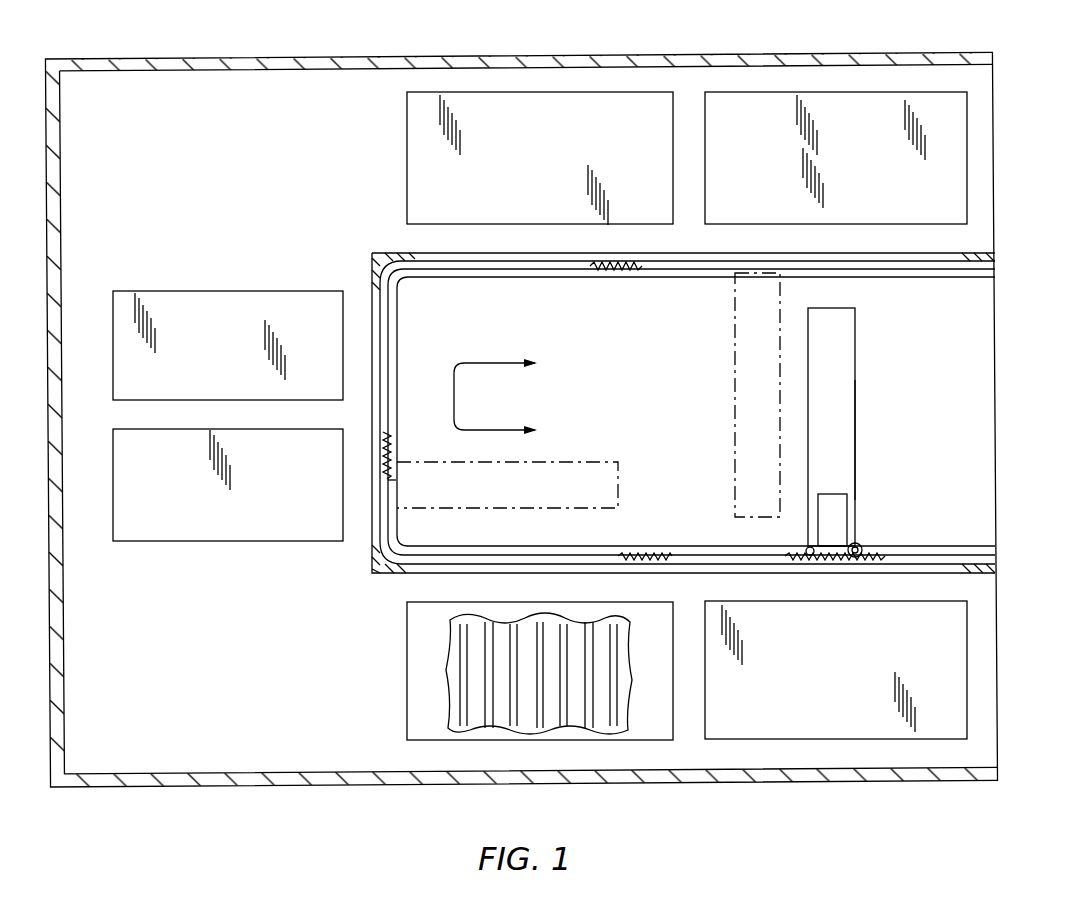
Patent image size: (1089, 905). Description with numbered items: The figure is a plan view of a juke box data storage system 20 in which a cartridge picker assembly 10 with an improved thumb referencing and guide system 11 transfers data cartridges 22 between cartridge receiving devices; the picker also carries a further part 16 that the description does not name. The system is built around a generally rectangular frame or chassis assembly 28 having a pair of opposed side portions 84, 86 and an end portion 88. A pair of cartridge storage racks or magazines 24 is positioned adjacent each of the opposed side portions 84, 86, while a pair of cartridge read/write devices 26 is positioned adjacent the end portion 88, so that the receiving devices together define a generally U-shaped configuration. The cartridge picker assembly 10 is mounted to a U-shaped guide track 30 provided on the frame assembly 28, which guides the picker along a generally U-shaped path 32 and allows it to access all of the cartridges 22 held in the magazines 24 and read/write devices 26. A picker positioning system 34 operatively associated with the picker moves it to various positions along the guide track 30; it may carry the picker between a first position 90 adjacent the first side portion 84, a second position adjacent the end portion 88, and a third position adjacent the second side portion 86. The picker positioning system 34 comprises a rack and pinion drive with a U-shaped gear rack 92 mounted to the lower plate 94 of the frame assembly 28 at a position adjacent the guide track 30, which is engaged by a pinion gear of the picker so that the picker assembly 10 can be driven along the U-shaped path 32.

The cartridge picker assembly 10 is at (857, 327).
The thumb referencing and guide system 11 is at (873, 456).
The upper portion of member 16 is at (873, 419).
The juke box data storage system 20 is at (521, 423).
The data cartridges 22 is at (856, 757).
The cartridge storage racks or magazines 24 is at (725, 92).
The cartridge read/write devices 26 is at (143, 429).
The frame or chassis assembly 28 is at (1006, 356).
The U-shaped guide track 30 is at (714, 412).
The U-shaped path 32 is at (454, 397).
The picker positioning system 34 is at (971, 538).
The first side portion 84 is at (962, 571).
The second side portion 86 is at (962, 251).
The end portion 88 is at (373, 556).
The first position 90 is at (658, 438).
The U-shaped gear rack 92 is at (656, 553).
The lower plate 94 is at (608, 346).